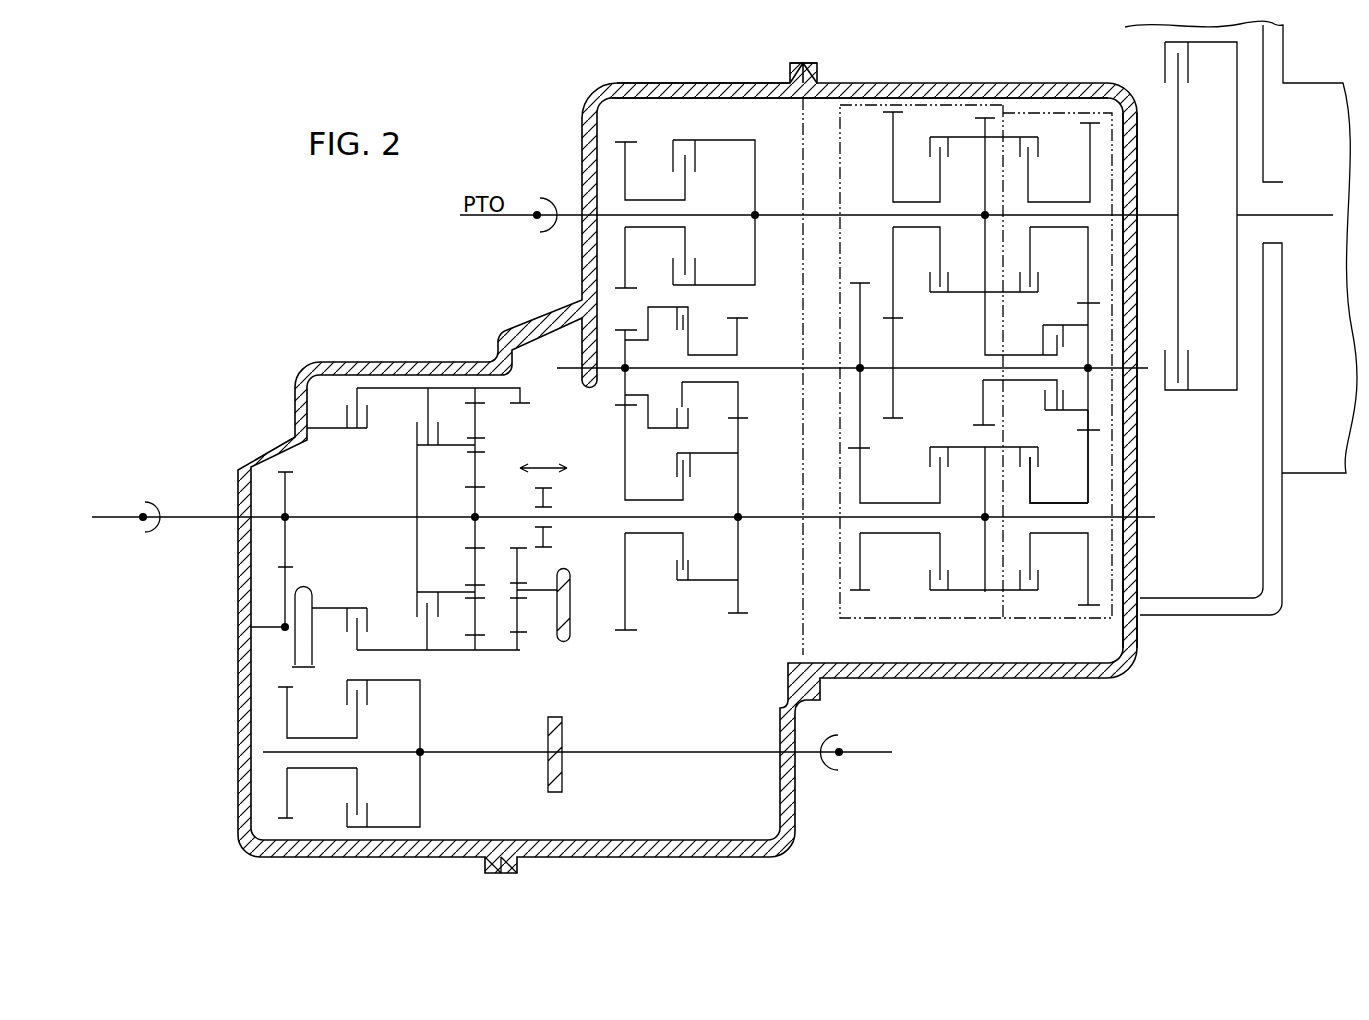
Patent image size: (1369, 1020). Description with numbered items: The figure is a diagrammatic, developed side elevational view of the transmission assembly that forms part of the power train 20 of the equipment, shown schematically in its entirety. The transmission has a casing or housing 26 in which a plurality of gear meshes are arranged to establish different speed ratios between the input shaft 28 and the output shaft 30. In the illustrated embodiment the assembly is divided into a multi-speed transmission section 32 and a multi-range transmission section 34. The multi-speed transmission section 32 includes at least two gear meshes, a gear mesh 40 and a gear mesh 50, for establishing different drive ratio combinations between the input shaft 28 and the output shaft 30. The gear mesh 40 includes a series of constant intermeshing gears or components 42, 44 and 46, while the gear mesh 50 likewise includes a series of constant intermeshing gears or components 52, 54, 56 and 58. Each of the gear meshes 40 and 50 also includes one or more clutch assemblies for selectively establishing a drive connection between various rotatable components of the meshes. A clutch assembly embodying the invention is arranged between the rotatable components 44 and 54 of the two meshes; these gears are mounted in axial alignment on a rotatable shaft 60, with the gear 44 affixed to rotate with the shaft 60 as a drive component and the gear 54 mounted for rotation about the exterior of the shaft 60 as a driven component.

The power train 20 is at (1311, 480).
The housing 26 is at (636, 841).
The input shaft 28 is at (1153, 213).
The output shaft 30 is at (204, 520).
The multi-speed transmission section 32 is at (943, 80).
The multi-range transmission section 34 is at (677, 81).
The gear mesh 40 is at (1119, 333).
The gear 42 is at (1090, 160).
The gear 44 is at (1091, 421).
The gear 46 is at (1091, 566).
The gear mesh 50 is at (914, 624).
The gear 52 is at (982, 122).
The gear 54 is at (982, 333).
The gear 56 is at (859, 440).
The gear 58 is at (860, 557).
The rotatable shaft 60 is at (945, 372).